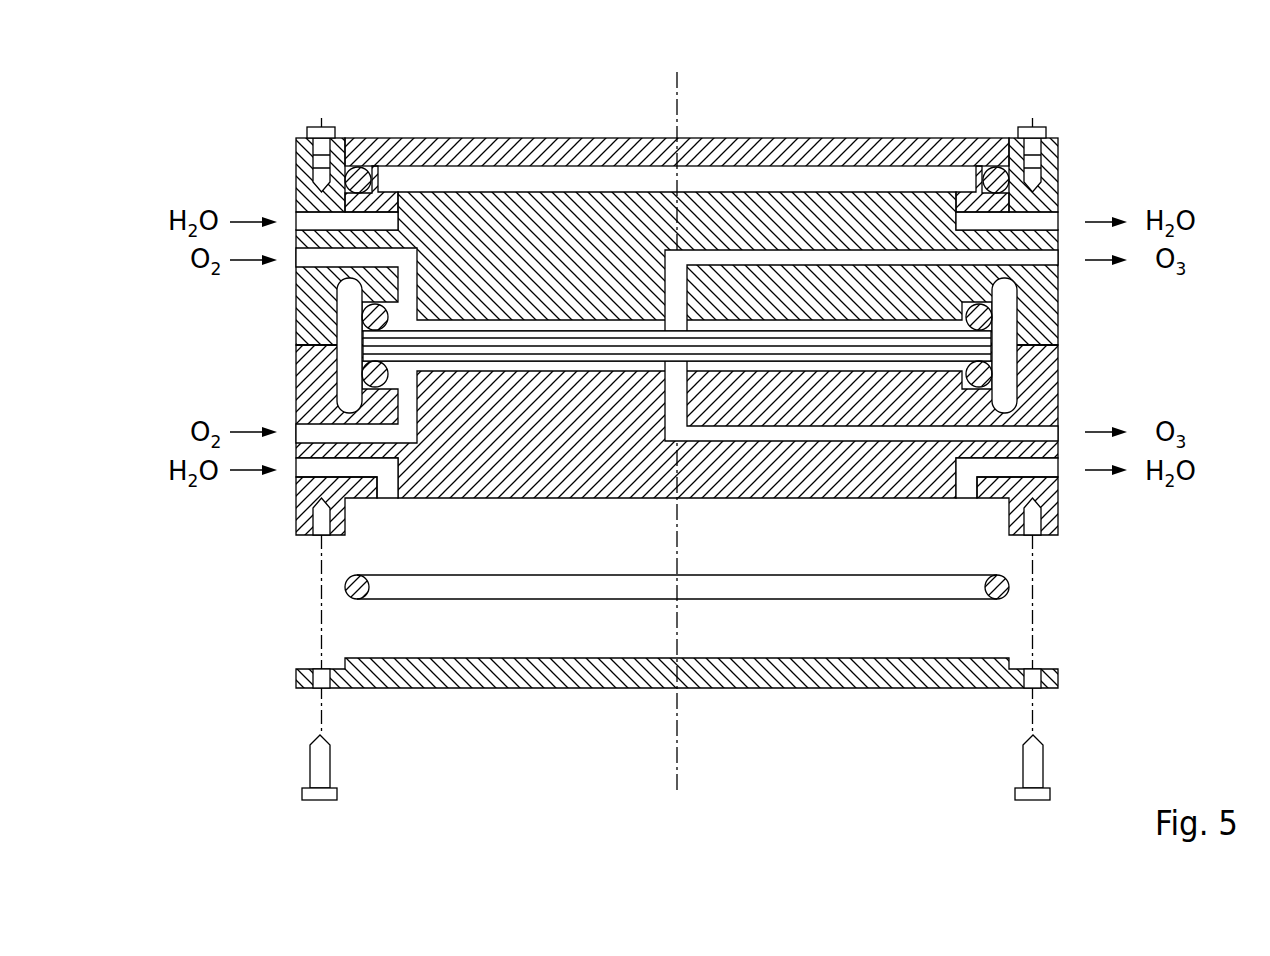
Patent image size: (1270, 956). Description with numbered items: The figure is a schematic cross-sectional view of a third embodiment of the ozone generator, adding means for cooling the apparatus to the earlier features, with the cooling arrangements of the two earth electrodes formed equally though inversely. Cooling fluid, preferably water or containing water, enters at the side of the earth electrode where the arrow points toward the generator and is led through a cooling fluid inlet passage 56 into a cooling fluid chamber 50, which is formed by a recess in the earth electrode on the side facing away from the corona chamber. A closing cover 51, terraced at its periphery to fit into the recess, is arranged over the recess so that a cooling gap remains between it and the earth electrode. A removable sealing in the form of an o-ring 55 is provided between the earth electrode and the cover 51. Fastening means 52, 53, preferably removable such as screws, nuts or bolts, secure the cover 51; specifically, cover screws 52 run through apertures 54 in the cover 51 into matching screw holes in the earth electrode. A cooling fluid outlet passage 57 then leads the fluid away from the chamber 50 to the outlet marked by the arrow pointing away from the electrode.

The cooling fluid chamber 50 is at (868, 185).
The closing cover 51 is at (763, 138).
The cover screws 52 is at (308, 130).
The fastening means 53 is at (297, 163).
The apertures 54 is at (1040, 668).
The o-ring 55 is at (358, 168).
The cooling fluid inlet passage 56 is at (390, 198).
The cooling fluid outlet passage 57 is at (963, 200).